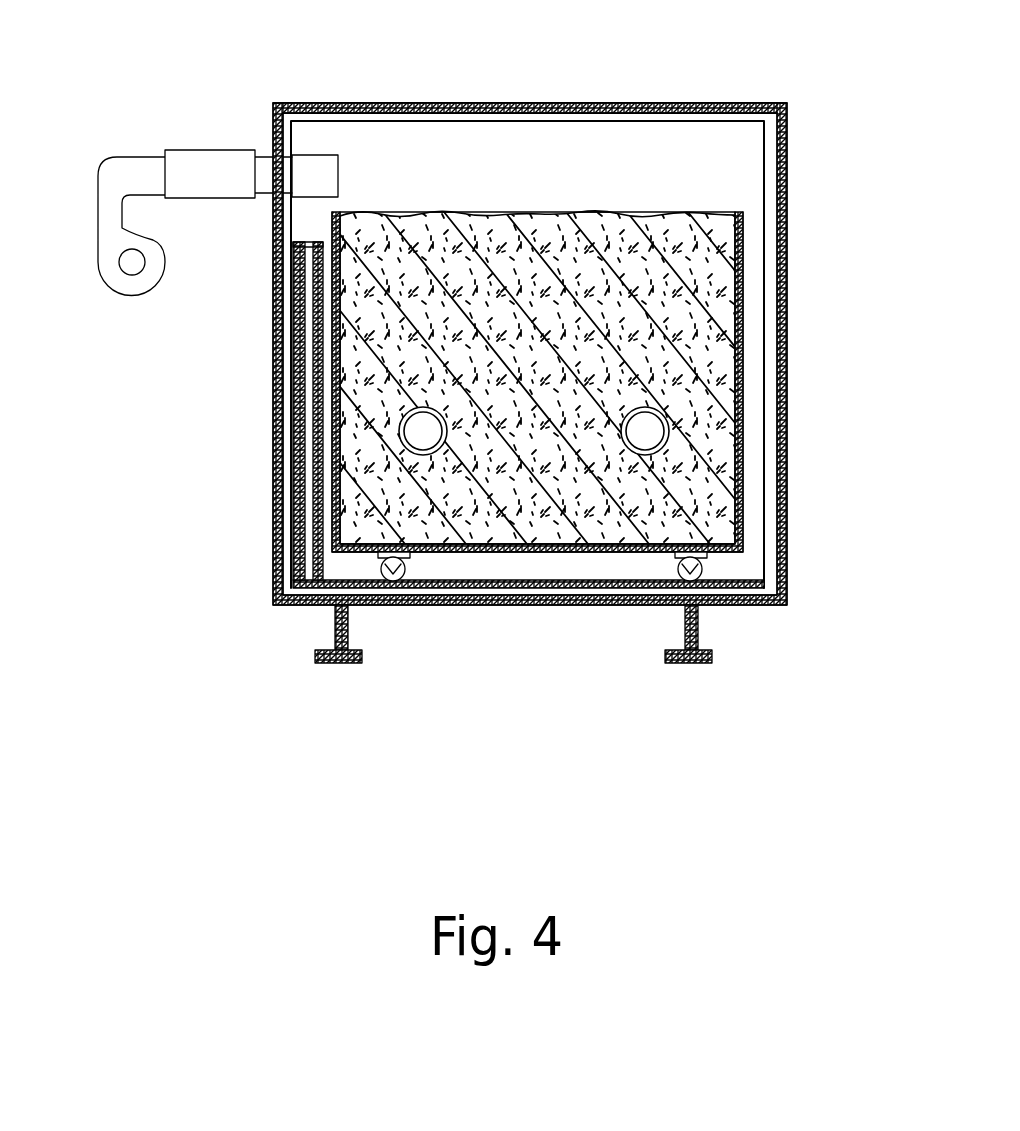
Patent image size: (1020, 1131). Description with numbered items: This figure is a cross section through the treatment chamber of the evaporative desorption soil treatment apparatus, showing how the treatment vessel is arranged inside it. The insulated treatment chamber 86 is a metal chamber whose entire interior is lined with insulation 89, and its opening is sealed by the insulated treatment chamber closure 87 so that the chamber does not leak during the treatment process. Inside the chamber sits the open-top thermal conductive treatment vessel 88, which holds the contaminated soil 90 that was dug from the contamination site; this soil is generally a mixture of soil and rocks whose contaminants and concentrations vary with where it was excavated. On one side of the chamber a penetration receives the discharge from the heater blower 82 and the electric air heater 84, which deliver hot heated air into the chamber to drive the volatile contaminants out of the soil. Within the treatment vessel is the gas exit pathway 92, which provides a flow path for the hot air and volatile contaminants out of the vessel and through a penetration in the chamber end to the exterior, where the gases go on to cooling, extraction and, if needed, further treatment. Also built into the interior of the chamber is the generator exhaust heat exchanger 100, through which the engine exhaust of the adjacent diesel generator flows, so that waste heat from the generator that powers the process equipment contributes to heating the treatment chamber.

The heater blower 82 is at (108, 249).
The electric air heater 84 is at (203, 150).
The insulated treatment chamber 86 is at (386, 103).
The insulated treatment chamber closure 87 is at (789, 362).
The thermal conductive treatment vessel 88 is at (745, 252).
The insulation 89 is at (704, 113).
The contaminated soil 90 is at (561, 214).
The gas exit pathway 92 is at (412, 449).
The generator exhaust heat exchanger 100 is at (286, 396).